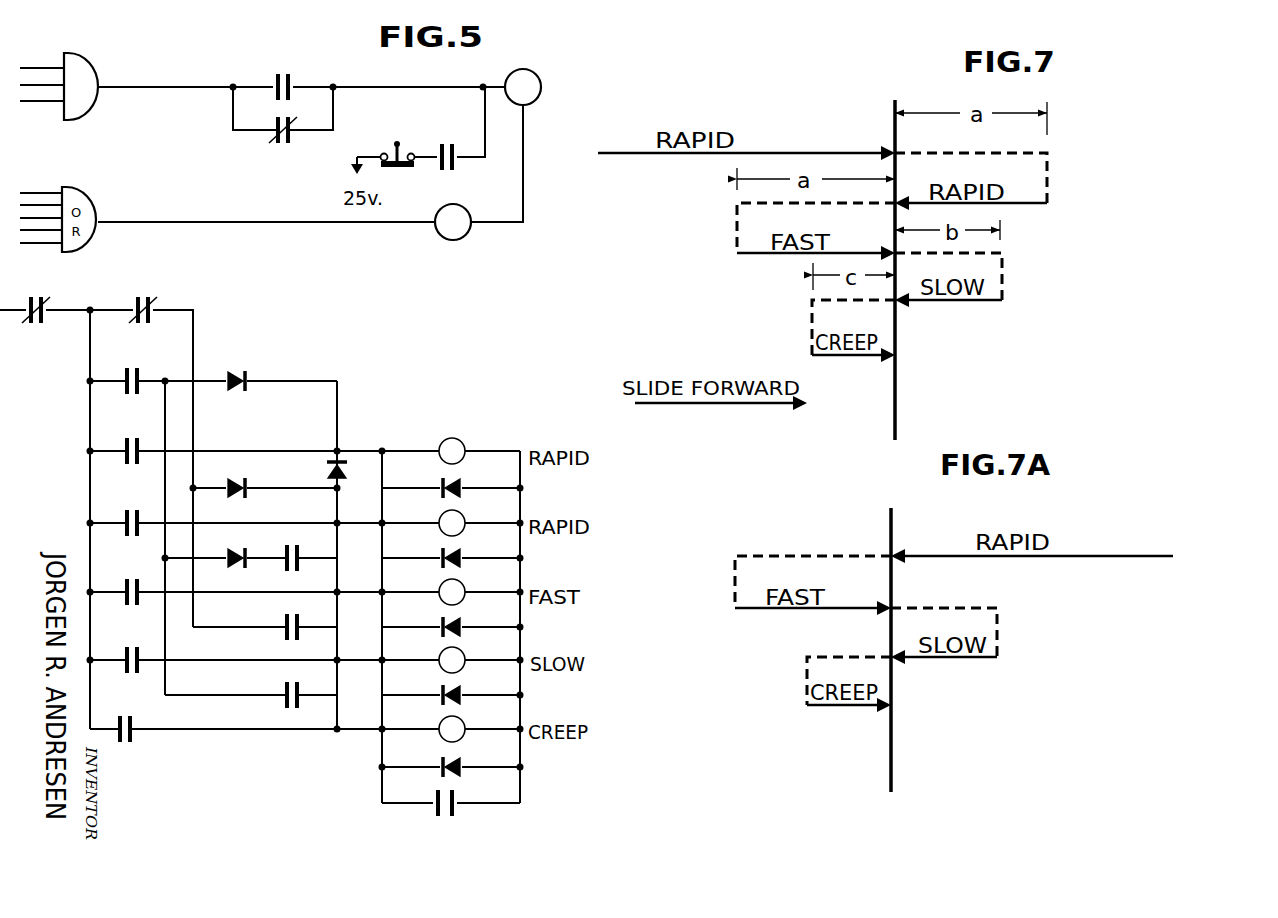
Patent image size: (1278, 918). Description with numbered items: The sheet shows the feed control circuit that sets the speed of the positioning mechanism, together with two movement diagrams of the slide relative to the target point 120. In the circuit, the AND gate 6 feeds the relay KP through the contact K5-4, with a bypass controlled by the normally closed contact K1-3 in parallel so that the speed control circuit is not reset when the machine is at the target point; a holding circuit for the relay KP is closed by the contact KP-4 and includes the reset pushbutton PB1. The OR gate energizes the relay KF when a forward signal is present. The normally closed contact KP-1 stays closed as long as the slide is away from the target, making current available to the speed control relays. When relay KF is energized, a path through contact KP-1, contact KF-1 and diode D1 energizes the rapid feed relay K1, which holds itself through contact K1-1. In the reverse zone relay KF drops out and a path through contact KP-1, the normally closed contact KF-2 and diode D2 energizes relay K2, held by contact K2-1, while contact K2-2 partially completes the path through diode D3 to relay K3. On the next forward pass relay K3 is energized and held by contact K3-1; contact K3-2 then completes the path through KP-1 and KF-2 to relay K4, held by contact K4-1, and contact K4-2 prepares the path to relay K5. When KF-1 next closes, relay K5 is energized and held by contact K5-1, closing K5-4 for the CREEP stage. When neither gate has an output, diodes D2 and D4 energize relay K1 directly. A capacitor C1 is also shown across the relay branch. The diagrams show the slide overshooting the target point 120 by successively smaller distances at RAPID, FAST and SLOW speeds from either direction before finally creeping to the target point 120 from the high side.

In FIG. 5, the AND gate 6 is at (67, 86).
In FIG. 7, the target point 120 is at (893, 110).
In FIG. 7A, the target point 120 is at (889, 526).
In FIG. 5, the contact K5-4 is at (315, 80).
In FIG. 5, the normally closed contact K1-3 is at (283, 115).
In FIG. 5, the reset pushbutton PB1 is at (397, 144).
In FIG. 5, the contact KP-4 is at (466, 169).
In FIG. 5, the relay KP is at (523, 87).
In FIG. 5, the relay KF is at (453, 222).
In FIG. 5, the normally closed contact KP1 KP-1 is at (55, 298).
In FIG. 5, the normally closed contact KF2 KF-2 is at (170, 303).
In FIG. 5, the contact KF1 KF-1 is at (140, 394).
In FIG. 5, the contact K1-1 is at (131, 464).
In FIG. 5, the contact K2-1 is at (127, 535).
In FIG. 5, the contact K2-2 is at (317, 551).
In FIG. 5, the contact K3-1 is at (130, 604).
In FIG. 5, the contact K3-2 is at (317, 620).
In FIG. 5, the contact K4-1 is at (130, 673).
In FIG. 5, the contact K4-2 is at (318, 689).
In FIG. 5, the contact K5-1 is at (130, 742).
In FIG. 5, the diode D1 is at (254, 373).
In FIG. 5, the diode D2 is at (253, 482).
In FIG. 5, the diode D3 is at (249, 549).
In FIG. 5, the diode D4 is at (353, 474).
In FIG. 5, the relay K1 is at (465, 446).
In FIG. 5, the relay K2 is at (465, 518).
In FIG. 5, the relay K3 is at (465, 588).
In FIG. 5, the relay K4 is at (465, 655).
In FIG. 5, the relay K5 is at (466, 724).
In FIG. 5, the capacitor C1 is at (461, 815).